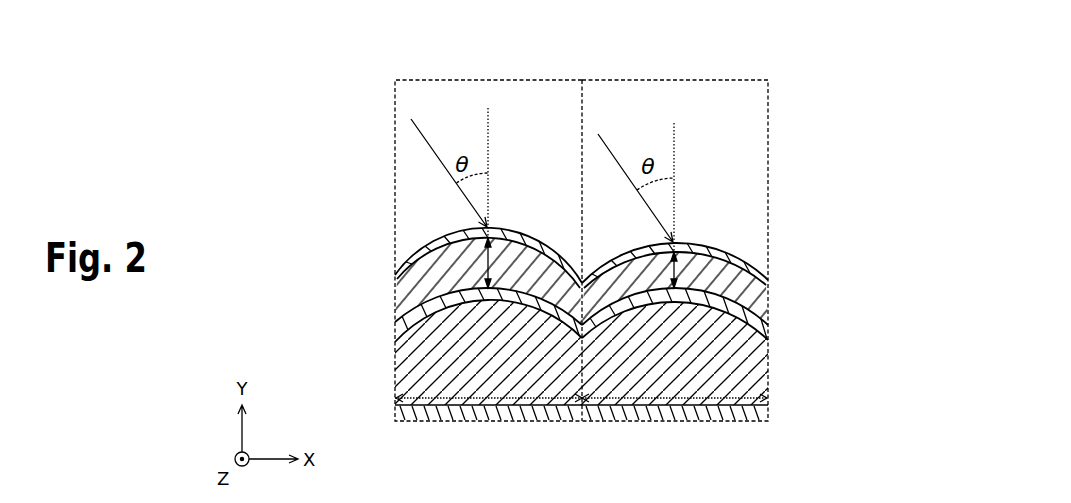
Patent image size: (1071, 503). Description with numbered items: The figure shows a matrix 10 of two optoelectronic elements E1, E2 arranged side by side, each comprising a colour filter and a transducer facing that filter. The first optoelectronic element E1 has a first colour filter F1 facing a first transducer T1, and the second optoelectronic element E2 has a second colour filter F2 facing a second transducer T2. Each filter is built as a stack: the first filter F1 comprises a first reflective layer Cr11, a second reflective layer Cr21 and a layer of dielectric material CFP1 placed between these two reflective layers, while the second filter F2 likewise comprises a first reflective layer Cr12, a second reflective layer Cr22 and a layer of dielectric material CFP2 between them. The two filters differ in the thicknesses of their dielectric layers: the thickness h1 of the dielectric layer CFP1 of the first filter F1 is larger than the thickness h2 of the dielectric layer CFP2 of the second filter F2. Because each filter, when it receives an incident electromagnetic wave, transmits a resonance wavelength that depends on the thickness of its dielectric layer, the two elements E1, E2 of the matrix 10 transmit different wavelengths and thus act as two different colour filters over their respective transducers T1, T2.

The matrix 10 is at (544, 250).
The first optoelectronic element E1 is at (410, 195).
The second optoelectronic element E2 is at (750, 186).
The first colour filter F1 is at (406, 285).
The second colour filter F2 is at (756, 289).
The second reflective layer of the first filter Cr21 is at (399, 252).
The dielectric material layer of the first filter CFP1 is at (408, 283).
The first reflective layer of the first filter Cr11 is at (429, 315).
The second reflective layer of the second filter Cr22 is at (745, 258).
The dielectric material layer of the second filter CFP2 is at (745, 300).
The first reflective layer of the second filter Cr12 is at (765, 335).
The first transducer T1 is at (497, 413).
The second transducer T2 is at (662, 413).
The thickness of the first dielectric layer h1 is at (473, 263).
The thickness of the second dielectric layer h2 is at (691, 271).